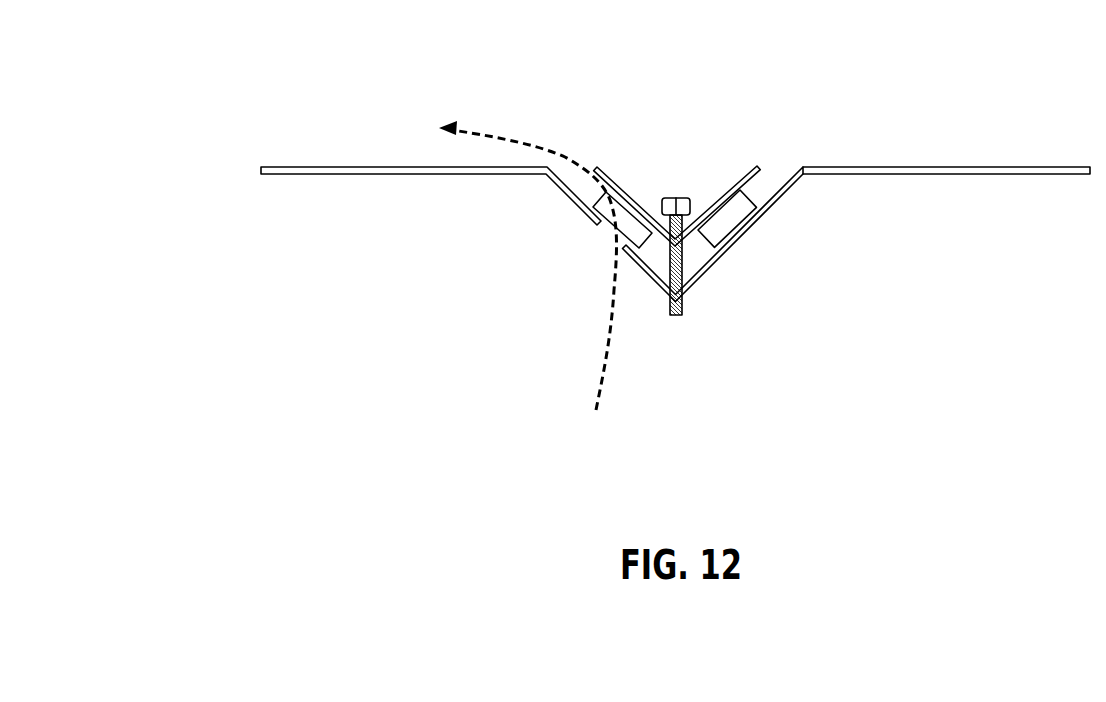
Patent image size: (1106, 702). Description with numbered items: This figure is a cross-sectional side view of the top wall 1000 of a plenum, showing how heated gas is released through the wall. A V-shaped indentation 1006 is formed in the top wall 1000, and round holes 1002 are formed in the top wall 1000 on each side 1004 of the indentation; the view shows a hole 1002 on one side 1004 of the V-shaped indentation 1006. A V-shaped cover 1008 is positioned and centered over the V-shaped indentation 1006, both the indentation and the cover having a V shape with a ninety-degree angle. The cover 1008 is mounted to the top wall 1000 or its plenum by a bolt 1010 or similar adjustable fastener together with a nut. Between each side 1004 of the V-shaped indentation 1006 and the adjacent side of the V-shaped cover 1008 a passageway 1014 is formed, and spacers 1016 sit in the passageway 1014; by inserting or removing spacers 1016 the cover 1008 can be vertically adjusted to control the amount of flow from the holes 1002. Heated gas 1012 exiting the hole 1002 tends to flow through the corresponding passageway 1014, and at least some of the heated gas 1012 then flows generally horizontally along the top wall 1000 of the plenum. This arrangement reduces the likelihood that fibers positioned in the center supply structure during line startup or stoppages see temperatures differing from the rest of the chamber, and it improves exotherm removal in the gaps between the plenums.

The top wall 1000 is at (310, 167).
The round hole 1002 is at (592, 257).
The side of the V-shaped indentation 1004 is at (567, 197).
The V-shaped indentation 1006 is at (700, 309).
The V-shaped cover 1008 is at (597, 167).
The bolt 1010 is at (684, 194).
The heated gas 1012 is at (596, 382).
The passageway 1014 is at (773, 170).
The spacer 1016 is at (636, 250).